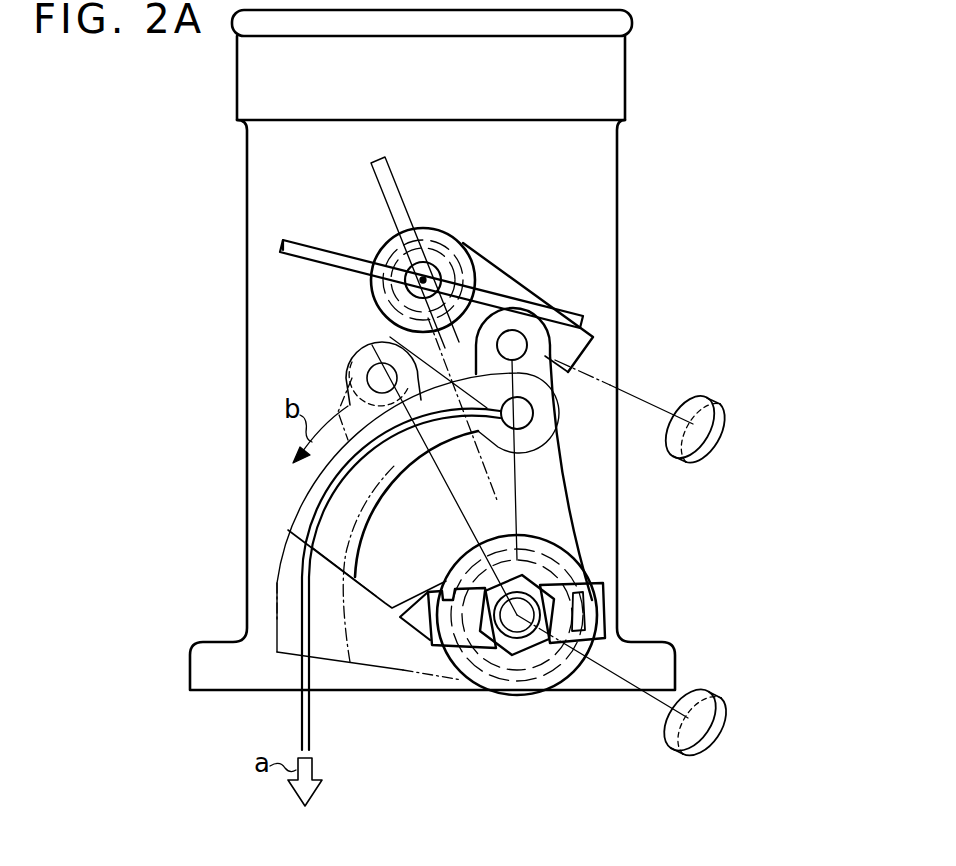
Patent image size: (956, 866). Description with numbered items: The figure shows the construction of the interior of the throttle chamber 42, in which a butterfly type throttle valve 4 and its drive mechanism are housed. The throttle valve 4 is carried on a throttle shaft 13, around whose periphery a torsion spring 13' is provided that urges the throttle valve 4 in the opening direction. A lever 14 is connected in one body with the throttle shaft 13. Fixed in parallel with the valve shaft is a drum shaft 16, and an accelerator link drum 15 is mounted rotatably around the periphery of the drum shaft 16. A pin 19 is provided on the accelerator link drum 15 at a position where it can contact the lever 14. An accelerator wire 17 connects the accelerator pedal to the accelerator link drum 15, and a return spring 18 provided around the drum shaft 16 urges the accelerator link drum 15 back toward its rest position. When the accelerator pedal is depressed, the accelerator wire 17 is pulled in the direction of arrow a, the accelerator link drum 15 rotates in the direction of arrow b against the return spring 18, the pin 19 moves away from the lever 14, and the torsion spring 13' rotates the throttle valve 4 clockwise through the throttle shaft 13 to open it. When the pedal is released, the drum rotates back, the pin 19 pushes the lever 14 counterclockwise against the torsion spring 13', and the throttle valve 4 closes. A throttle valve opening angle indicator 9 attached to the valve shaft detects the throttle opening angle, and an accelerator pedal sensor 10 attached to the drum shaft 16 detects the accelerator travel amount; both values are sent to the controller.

The throttle chamber 42 is at (625, 52).
The throttle valve 4 is at (283, 240).
The throttle shaft 13 is at (423, 251).
The torsion spring 13' is at (453, 249).
The lever 14 is at (518, 292).
The pin 19 is at (356, 372).
The throttle valve opening angle indicator 9 is at (700, 400).
The accelerator link drum 15 is at (378, 588).
The accelerator wire 17 is at (300, 728).
The return spring 18 is at (495, 692).
The drum shaft 16 is at (548, 690).
The accelerator pedal sensor 10 is at (708, 735).